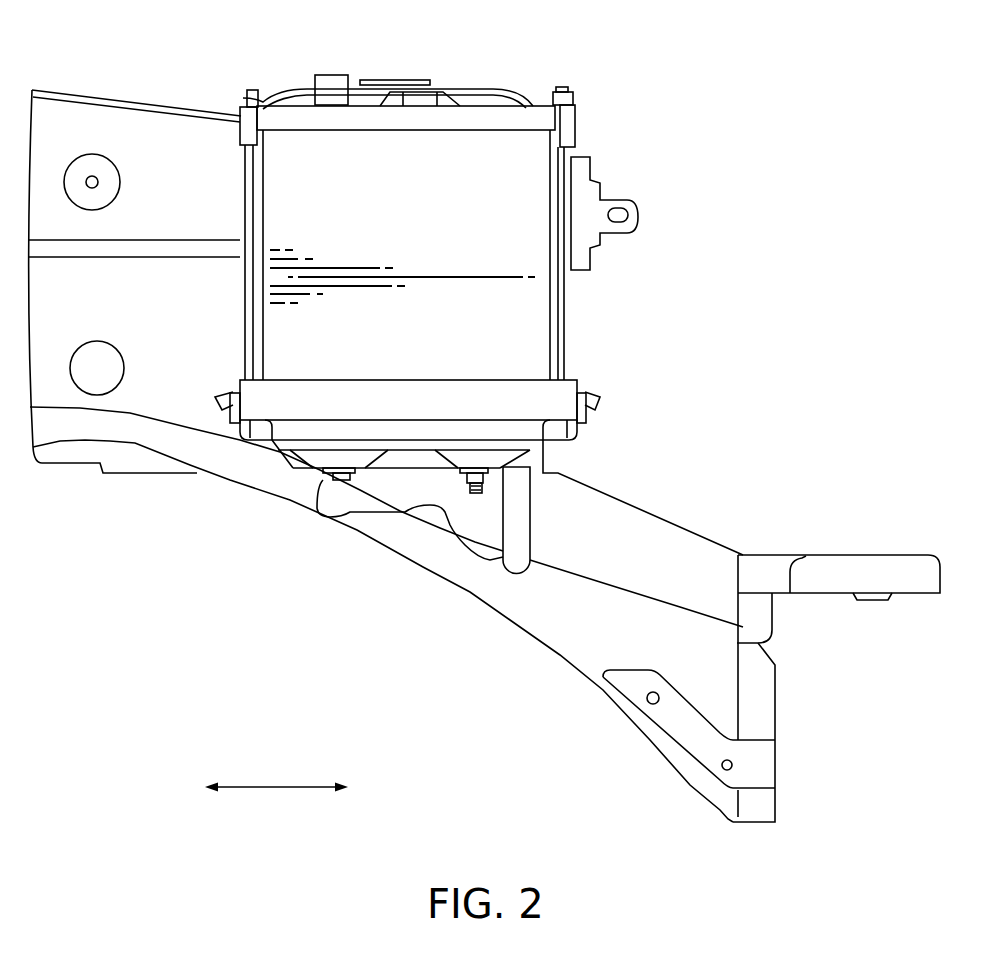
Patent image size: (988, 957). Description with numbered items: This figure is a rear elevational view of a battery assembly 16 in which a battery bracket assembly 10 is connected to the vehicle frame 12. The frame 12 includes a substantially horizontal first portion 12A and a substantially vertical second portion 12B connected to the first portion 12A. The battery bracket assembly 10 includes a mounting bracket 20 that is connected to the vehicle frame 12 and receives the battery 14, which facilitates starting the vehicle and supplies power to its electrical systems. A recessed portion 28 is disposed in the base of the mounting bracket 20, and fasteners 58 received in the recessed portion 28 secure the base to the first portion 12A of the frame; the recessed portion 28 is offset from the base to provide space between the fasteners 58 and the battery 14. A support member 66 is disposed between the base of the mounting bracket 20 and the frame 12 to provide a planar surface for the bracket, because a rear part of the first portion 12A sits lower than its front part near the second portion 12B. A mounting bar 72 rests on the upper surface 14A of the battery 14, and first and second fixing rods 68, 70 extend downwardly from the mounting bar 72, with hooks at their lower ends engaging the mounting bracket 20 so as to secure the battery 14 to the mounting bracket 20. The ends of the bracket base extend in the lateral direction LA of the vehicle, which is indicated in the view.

The battery bracket assembly 10 is at (650, 401).
The vehicle frame 12 is at (86, 82).
The first portion 12A is at (548, 453).
The second portion 12B is at (163, 160).
The battery 14 is at (552, 296).
The upper surface 14A is at (470, 103).
The battery assembly 16 is at (220, 594).
The mounting bracket 20 is at (275, 455).
The recessed portion 28 is at (398, 450).
The fasteners 58 is at (463, 483).
The support member 66 is at (530, 527).
The first fixing rod 68 is at (242, 300).
The second fixing rod 70 is at (573, 324).
The mounting bar 72 is at (510, 90).
The lateral direction LA is at (267, 787).